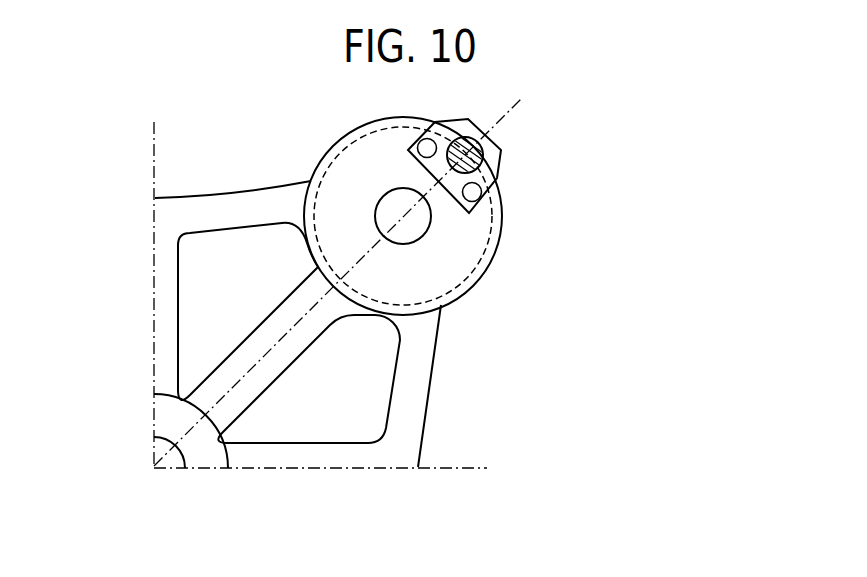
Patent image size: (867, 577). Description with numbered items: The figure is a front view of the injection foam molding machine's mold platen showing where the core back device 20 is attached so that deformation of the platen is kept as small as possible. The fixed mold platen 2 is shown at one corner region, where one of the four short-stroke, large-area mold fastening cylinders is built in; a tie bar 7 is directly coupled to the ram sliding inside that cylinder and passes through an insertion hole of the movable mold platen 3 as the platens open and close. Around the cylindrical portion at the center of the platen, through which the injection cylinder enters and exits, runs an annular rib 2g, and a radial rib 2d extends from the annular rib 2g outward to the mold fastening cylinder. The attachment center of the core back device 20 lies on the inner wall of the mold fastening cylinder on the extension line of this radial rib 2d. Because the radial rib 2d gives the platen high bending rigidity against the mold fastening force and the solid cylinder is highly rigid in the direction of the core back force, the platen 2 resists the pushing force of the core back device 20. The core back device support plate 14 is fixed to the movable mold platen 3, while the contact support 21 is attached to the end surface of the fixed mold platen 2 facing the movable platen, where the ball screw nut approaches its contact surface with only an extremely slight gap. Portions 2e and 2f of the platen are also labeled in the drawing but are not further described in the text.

The fixed mold platen 2 is at (362, 318).
The movable mold platen 3 is at (420, 367).
The rib 2d is at (275, 367).
The leg portion 2e is at (413, 408).
The boss portion 2f is at (493, 260).
The annular rib 2g is at (233, 456).
The tie bar 7 is at (380, 197).
The core back device support plate 14 is at (535, 175).
The contact support 21 is at (498, 178).
The core back device 20 is at (492, 165).